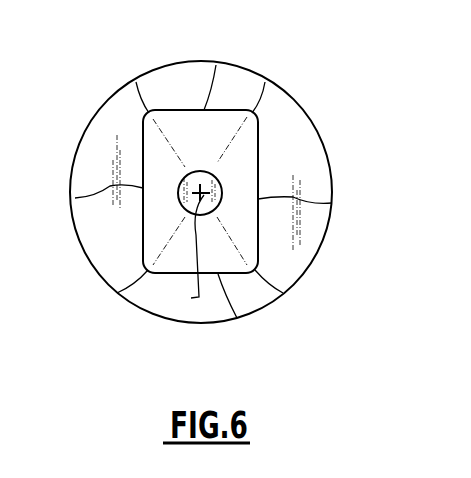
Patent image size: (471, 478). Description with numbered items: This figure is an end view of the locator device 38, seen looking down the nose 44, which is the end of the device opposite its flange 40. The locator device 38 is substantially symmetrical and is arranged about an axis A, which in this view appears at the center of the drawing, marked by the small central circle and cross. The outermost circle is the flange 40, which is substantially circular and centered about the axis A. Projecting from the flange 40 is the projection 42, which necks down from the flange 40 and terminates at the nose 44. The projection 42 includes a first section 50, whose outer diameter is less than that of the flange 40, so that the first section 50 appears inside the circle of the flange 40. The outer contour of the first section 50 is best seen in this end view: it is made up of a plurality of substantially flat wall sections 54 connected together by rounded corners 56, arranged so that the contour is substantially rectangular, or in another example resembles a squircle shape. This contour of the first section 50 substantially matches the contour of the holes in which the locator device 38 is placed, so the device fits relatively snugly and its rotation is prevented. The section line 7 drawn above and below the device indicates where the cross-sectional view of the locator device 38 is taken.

The locator device 38 is at (161, 54).
The flange 40 is at (97, 152).
The projection 42 is at (124, 223).
The nose 44 is at (208, 180).
The first section 50 is at (270, 134).
The wall sections 54 is at (216, 65).
The rounded corners 56 is at (136, 82).
The axis A is at (190, 253).
The line 7- 7 is at (193, 13).